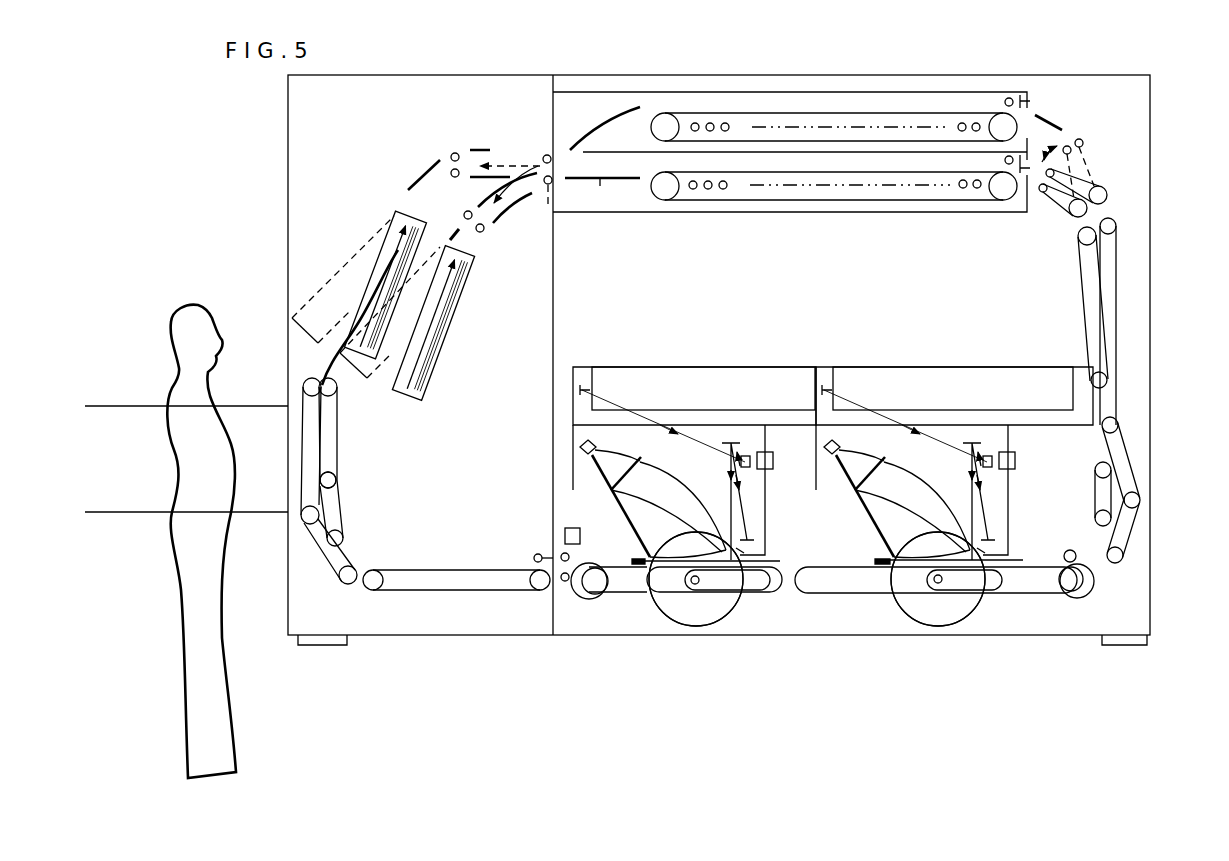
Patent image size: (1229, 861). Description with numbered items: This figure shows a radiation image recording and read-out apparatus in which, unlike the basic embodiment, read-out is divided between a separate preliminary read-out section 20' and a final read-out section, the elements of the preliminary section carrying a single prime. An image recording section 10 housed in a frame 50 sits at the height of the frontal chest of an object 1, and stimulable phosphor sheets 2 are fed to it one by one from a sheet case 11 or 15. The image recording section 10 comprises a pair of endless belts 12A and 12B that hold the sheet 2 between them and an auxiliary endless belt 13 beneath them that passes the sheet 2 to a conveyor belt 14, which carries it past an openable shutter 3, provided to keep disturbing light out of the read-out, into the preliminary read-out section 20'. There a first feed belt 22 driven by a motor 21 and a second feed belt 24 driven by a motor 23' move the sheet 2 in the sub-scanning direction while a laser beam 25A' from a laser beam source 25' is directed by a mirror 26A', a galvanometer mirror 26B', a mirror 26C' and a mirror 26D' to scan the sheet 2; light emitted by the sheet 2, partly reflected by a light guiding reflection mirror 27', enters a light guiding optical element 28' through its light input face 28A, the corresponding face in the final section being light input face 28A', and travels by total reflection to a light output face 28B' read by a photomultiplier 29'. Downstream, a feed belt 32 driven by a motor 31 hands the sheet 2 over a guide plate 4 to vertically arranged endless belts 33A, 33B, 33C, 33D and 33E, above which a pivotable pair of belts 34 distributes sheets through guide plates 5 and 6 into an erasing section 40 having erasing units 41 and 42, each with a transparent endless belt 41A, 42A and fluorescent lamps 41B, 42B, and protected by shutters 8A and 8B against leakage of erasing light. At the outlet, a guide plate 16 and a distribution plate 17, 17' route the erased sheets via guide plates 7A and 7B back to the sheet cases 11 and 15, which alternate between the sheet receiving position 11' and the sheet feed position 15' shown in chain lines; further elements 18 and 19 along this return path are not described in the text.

The object 1 is at (162, 330).
The stimulable phosphor sheet 2 is at (330, 352).
The openable shutter 3 is at (545, 555).
The guide plate 4 is at (1098, 560).
The guide plate 5 is at (1065, 124).
The guide plate 6 is at (1032, 182).
The guide plate 7A is at (600, 120).
The guide plate 7B is at (602, 188).
The shutter 8A is at (1032, 105).
The shutter 8B is at (1020, 182).
The image recording section 10 is at (354, 479).
The sheet case 11 is at (386, 280).
The chain line 11' is at (343, 279).
The endless belt 12A is at (301, 442).
The endless belt 12B is at (340, 447).
The auxiliary endless belt 13 is at (322, 575).
The conveyor belt 14 is at (464, 592).
The sheet case 15 is at (441, 323).
The chain line 15' is at (390, 335).
The guide plate 16 is at (487, 232).
The distribution plate 17 is at (511, 164).
The guide 17' is at (520, 207).
The guide 18 is at (458, 237).
The guide plate 19 is at (432, 170).
The preliminary read-out section 20' is at (733, 604).
The motor 21 is at (583, 598).
The first feed belt 22 is at (612, 592).
The motor 23' is at (727, 623).
The second feed belt 24 is at (775, 596).
The laser beam source 25' is at (694, 373).
The laser beam 25A' is at (708, 501).
The mirror 26A' is at (657, 391).
The galvanometer mirror 26B' is at (776, 424).
The mirror 26C' is at (782, 490).
The mirror 26D' is at (703, 404).
The light guiding reflection mirror 27' is at (779, 545).
The light guiding optical element 28' is at (659, 506).
The light input face 28A is at (696, 579).
The light input face 28A' is at (938, 579).
The light output face 28B' is at (618, 463).
The photomultiplier 29' is at (540, 464).
The motor 31 is at (1093, 593).
The feed belt 32 is at (1036, 596).
The endless belt 33A is at (1140, 525).
The endless belt 33B is at (1135, 460).
The endless belt 33C is at (1120, 263).
The endless belt 33D is at (1081, 285).
The endless belt 33E is at (1093, 482).
The pair of belts 34 is at (1097, 186).
The erasing section 40 is at (869, 88).
The erasing unit 41 is at (801, 105).
The transparent endless belt 41A is at (760, 113).
The fluorescent lamps 41B is at (712, 122).
The erasing unit 42 is at (817, 204).
The transparent endless belt 42A is at (765, 202).
The fluorescent lamps 42B is at (710, 190).
The frame 50 is at (610, 74).